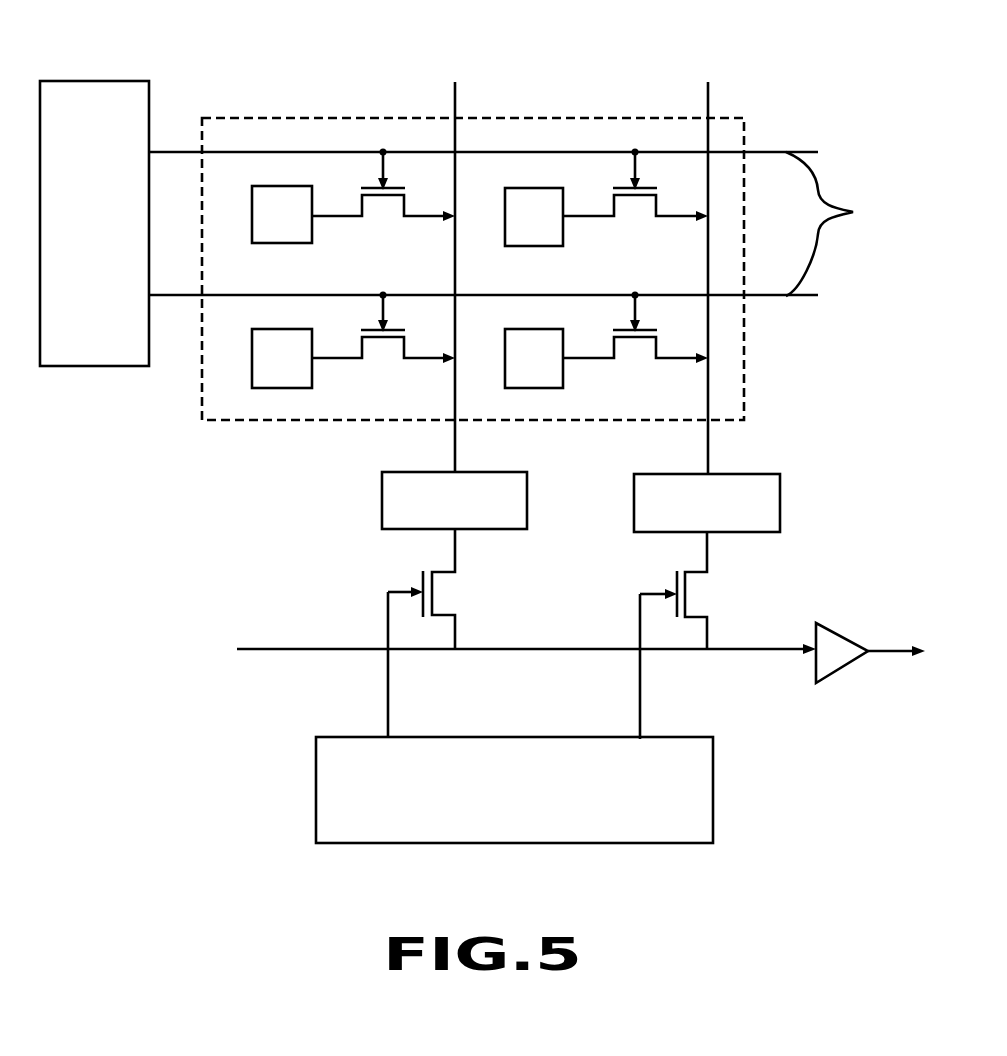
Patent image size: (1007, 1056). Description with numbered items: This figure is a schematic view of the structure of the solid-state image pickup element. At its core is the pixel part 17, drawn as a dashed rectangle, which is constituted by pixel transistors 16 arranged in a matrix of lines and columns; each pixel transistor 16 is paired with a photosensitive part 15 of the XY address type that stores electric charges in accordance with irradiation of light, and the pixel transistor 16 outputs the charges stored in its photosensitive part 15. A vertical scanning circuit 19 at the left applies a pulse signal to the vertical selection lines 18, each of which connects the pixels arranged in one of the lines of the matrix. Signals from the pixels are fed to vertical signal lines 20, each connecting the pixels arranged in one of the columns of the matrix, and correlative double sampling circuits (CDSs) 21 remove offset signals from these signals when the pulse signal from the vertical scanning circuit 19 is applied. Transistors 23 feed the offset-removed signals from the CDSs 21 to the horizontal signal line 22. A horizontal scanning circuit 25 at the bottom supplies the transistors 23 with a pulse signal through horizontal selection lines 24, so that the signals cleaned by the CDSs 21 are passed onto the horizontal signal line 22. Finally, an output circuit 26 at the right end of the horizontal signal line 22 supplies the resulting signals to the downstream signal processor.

The photosensitive part 15 is at (407, 287).
The pixel transistor 16 is at (383, 219).
The pixel part 17 is at (295, 117).
The vertical selection line 18 is at (848, 224).
The vertical scanning circuit 19 is at (88, 80).
The vertical signal line 20 is at (708, 110).
The correlative double sampling circuit 21 is at (382, 478).
The horizontal signal line 22 is at (294, 648).
The transistor 23 is at (440, 585).
The horizontal selection line 24 is at (640, 705).
The horizontal scanning circuit 25 is at (713, 763).
The output circuit 26 is at (835, 639).